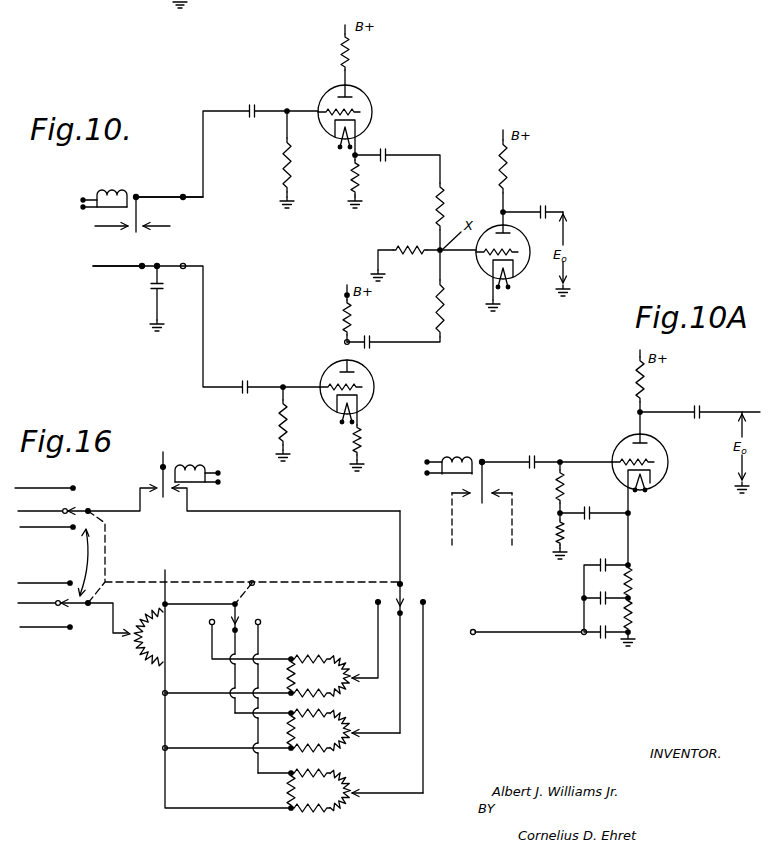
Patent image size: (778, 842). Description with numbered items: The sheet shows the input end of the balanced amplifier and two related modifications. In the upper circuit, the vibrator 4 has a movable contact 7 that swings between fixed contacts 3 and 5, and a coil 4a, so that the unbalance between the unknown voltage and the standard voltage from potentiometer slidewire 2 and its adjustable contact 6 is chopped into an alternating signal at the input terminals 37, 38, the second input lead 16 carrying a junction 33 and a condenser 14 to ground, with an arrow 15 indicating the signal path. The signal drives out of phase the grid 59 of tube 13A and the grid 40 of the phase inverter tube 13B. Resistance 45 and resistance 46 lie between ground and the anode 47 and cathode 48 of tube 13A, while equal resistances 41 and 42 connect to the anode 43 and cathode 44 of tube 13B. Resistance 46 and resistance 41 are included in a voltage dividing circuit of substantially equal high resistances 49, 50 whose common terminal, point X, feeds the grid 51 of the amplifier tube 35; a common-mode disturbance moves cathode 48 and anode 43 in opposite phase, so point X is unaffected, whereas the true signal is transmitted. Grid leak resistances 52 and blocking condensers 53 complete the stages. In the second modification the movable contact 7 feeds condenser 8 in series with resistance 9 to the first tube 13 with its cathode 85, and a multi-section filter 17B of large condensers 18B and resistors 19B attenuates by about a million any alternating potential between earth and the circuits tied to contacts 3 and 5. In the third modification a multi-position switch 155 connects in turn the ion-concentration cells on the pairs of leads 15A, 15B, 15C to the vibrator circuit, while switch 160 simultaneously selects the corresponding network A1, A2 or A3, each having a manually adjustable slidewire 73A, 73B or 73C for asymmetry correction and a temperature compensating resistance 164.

In FIG. 10, the resistance 45 is at (349, 57).
In FIG. 10, the anode of tube 13A 47 is at (350, 96).
In FIG. 10, the amplifier tube 13A is at (392, 121).
In FIG. 10, the control grid of tube 13A 59 is at (364, 112).
In FIG. 10, the cathode of tube 13A 48 is at (336, 135).
In FIG. 10, the blocking condensers 53 is at (256, 106).
In FIG. 10, the grid leak resistances 52 is at (283, 170).
In FIG. 10, the resistance 46 is at (359, 185).
In FIG. 10, the resistance 49 is at (437, 229).
In FIG. 10, the resistance 50 is at (444, 334).
In FIG. 10, the amplifier tube 35 is at (498, 268).
In FIG. 10, the grid of amplifier tube 35 51 is at (486, 254).
In FIG. 10, the resistance 41 is at (351, 318).
In FIG. 10, the anode of tube 13B 43 is at (372, 378).
In FIG. 10, the grid of tube 13B 40 is at (335, 386).
In FIG. 10, the phase inverter tube 13B is at (361, 397).
In FIG. 10, the cathode of tube 13B 44 is at (337, 412).
In FIG. 10, the resistance 42 is at (361, 438).
In FIG. 10, the coil 4a is at (113, 190).
In FIG. 10A, the coil 4a is at (464, 456).
In FIG. 16, the coil 4a is at (222, 462).
In FIG. 10, the potentiometer slidewire 2 is at (72, 197).
In FIG. 10A, the potentiometer slidewire 2 is at (419, 461).
In FIG. 16, the potentiometer slidewire 2 is at (148, 659).
In FIG. 10, the input terminal 37 is at (181, 196).
In FIG. 10, the movable contact of the vibrator 7 is at (137, 210).
In FIG. 10A, the movable contact of the vibrator 7 is at (484, 473).
In FIG. 16, the movable contact of the vibrator 7 is at (160, 474).
In FIG. 10, the vibrator 4 is at (166, 222).
In FIG. 16, the vibrator 4 is at (198, 454).
In FIG. 10, the input connection 15 is at (106, 219).
In FIG. 10A, the input connection 15 is at (452, 530).
In FIG. 16, the input connection 15 is at (125, 513).
In FIG. 10, the input lead 16 is at (117, 256).
In FIG. 10A, the input lead 16 is at (508, 636).
In FIG. 16, the input lead 16 is at (111, 622).
In FIG. 10, the junction 33 is at (140, 270).
In FIG. 10, the condenser 14 is at (160, 290).
In FIG. 10, the input terminal 38 is at (185, 262).
In FIG. 10A, the first tube of the amplifier 13 is at (655, 499).
In FIG. 10A, the cathode of tube 13 85 is at (655, 480).
In FIG. 10A, the condenser 8 is at (536, 460).
In FIG. 10A, the resistance 9 is at (565, 490).
In FIG. 10A, the condensers 18B is at (606, 561).
In FIG. 10A, the multi-section filter 17B is at (582, 596).
In FIG. 10A, the resistors 19B is at (633, 580).
In FIG. 10A, the fixed contact of the vibrator 3 is at (451, 494).
In FIG. 16, the fixed contact of the vibrator 3 is at (148, 486).
In FIG. 10A, the fixed contact of the vibrator 5 is at (512, 492).
In FIG. 16, the fixed contact of the vibrator 5 is at (190, 496).
In FIG. 16, the pair of leads 15A is at (27, 488).
In FIG. 16, the pair of leads 15B is at (22, 511).
In FIG. 16, the pair of leads 15C is at (23, 527).
In FIG. 16, the multi-position switch 155 is at (232, 557).
In FIG. 16, the adjustable contact of slidewire 6 is at (121, 648).
In FIG. 16, the switch 160 is at (396, 592).
In FIG. 16, the temperature compensating resistance 164 is at (278, 733).
In FIG. 16, the network A1 is at (335, 654).
In FIG. 16, the network A2 is at (345, 736).
In FIG. 16, the network A3 is at (357, 796).
In FIG. 16, the slidewire 73A is at (344, 690).
In FIG. 16, the slidewire 73B is at (346, 745).
In FIG. 16, the slidewire 73C is at (346, 805).